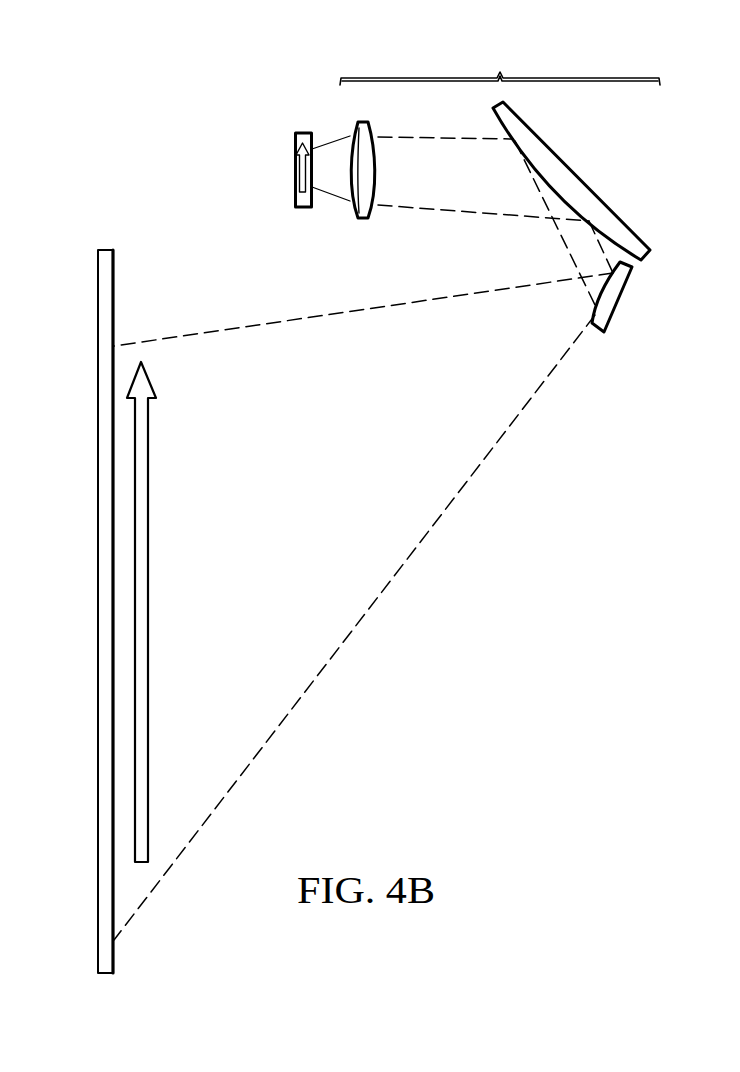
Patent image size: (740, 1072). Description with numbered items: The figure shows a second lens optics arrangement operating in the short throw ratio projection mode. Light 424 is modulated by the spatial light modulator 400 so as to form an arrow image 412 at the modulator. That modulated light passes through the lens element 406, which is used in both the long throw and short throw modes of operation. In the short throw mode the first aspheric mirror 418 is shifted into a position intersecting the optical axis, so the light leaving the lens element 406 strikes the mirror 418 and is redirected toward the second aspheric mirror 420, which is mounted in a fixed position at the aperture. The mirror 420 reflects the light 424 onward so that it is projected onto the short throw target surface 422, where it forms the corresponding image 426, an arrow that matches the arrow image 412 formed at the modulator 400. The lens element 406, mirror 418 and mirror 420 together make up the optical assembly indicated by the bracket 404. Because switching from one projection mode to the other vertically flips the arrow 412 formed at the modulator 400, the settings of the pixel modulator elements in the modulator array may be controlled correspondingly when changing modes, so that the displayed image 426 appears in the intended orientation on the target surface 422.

The spatial light modulator 400 is at (295, 198).
The optical projection assembly 404 is at (500, 64).
The lens element 406 is at (363, 220).
The arrow image 412 is at (299, 165).
The first aspheric mirror 418 is at (578, 173).
The second aspheric mirror 420 is at (622, 300).
The target surface 422 is at (97, 490).
The light 424 is at (422, 541).
The image 426 is at (148, 617).